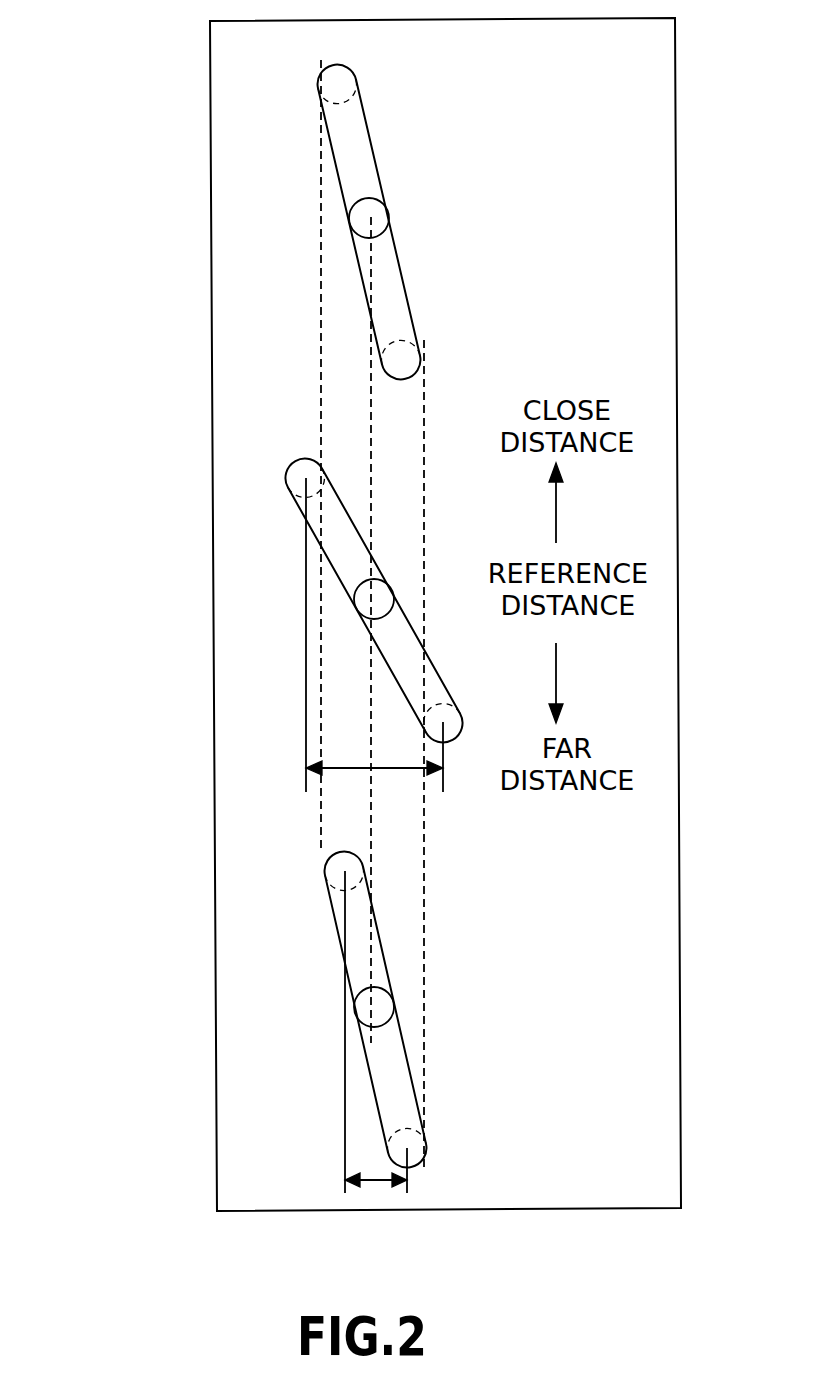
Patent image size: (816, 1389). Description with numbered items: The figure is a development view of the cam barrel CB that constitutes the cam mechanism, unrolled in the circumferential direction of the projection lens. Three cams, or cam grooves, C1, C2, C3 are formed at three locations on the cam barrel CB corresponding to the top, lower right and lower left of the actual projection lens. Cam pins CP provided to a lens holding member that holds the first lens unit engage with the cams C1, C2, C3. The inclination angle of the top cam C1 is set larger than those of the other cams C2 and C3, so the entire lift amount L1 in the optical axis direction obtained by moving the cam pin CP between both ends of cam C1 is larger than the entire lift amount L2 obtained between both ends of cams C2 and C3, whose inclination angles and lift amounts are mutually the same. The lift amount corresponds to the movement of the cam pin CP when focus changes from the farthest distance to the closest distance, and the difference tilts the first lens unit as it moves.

The top cam C1 is at (337, 580).
The cam C2 is at (340, 185).
The cam C3 is at (337, 927).
The cam pin CP is at (382, 595).
The entire lift amount L1 is at (355, 767).
The entire lift amount L2 is at (377, 1177).
The cam barrel CB is at (645, 913).